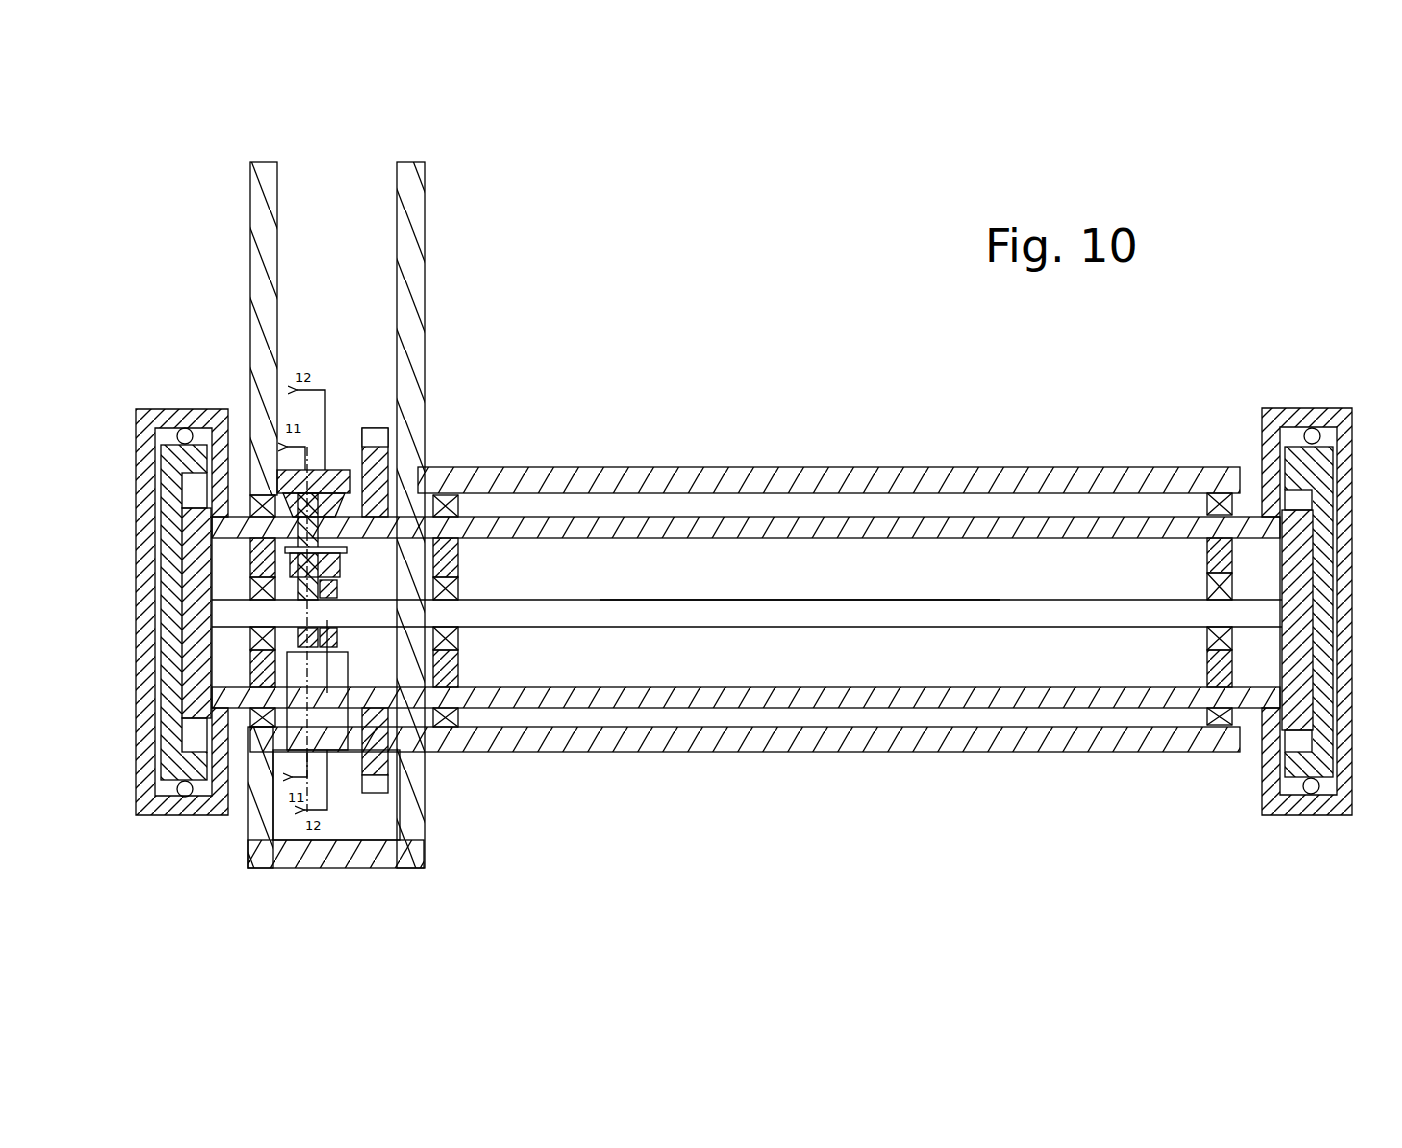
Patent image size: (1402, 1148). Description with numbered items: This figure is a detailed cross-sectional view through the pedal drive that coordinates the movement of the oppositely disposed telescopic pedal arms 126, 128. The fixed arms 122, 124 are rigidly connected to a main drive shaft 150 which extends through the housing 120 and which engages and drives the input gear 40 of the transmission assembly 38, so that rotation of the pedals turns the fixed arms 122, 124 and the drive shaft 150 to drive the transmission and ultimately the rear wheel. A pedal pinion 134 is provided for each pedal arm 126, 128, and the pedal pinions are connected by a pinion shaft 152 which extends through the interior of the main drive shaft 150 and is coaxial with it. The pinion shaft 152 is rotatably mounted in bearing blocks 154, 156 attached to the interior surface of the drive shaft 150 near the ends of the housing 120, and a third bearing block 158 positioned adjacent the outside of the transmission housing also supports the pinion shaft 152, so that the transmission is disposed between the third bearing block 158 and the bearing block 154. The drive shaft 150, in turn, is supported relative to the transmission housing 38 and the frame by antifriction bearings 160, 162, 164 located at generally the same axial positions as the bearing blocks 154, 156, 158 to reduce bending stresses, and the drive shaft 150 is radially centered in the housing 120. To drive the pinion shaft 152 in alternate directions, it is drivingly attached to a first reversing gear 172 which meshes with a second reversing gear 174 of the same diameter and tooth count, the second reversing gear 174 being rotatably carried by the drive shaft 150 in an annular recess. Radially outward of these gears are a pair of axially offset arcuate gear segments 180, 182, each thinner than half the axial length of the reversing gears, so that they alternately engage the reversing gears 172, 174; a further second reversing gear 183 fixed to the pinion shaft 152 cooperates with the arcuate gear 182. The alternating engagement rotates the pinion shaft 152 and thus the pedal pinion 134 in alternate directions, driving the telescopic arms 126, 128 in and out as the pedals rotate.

The transmission assembly 38 is at (417, 196).
The input gear 40 is at (398, 493).
The housing 120 is at (1034, 754).
The fixed arm 122 is at (1295, 410).
The fixed arm 124 is at (137, 412).
The telescopic pedal arm 126 is at (1318, 468).
The telescopic pedal arm 128 is at (165, 474).
The pedal pinion 134 is at (200, 601).
The main drive shaft 150 is at (877, 700).
The pinion shaft 152 is at (822, 605).
The bearing block 154 is at (457, 690).
The bearing block 156 is at (1218, 690).
The third bearing block 158 is at (255, 667).
The antifriction bearing 160 is at (452, 516).
The antifriction bearing 162 is at (1215, 494).
The antifriction bearing 164 is at (251, 728).
The first reversing gear 172 is at (320, 590).
The second reversing gear 174 is at (336, 497).
The arcuate gear segment 180 is at (303, 494).
The arcuate gear segment 182 is at (347, 845).
The second reversing gear 183 is at (332, 633).